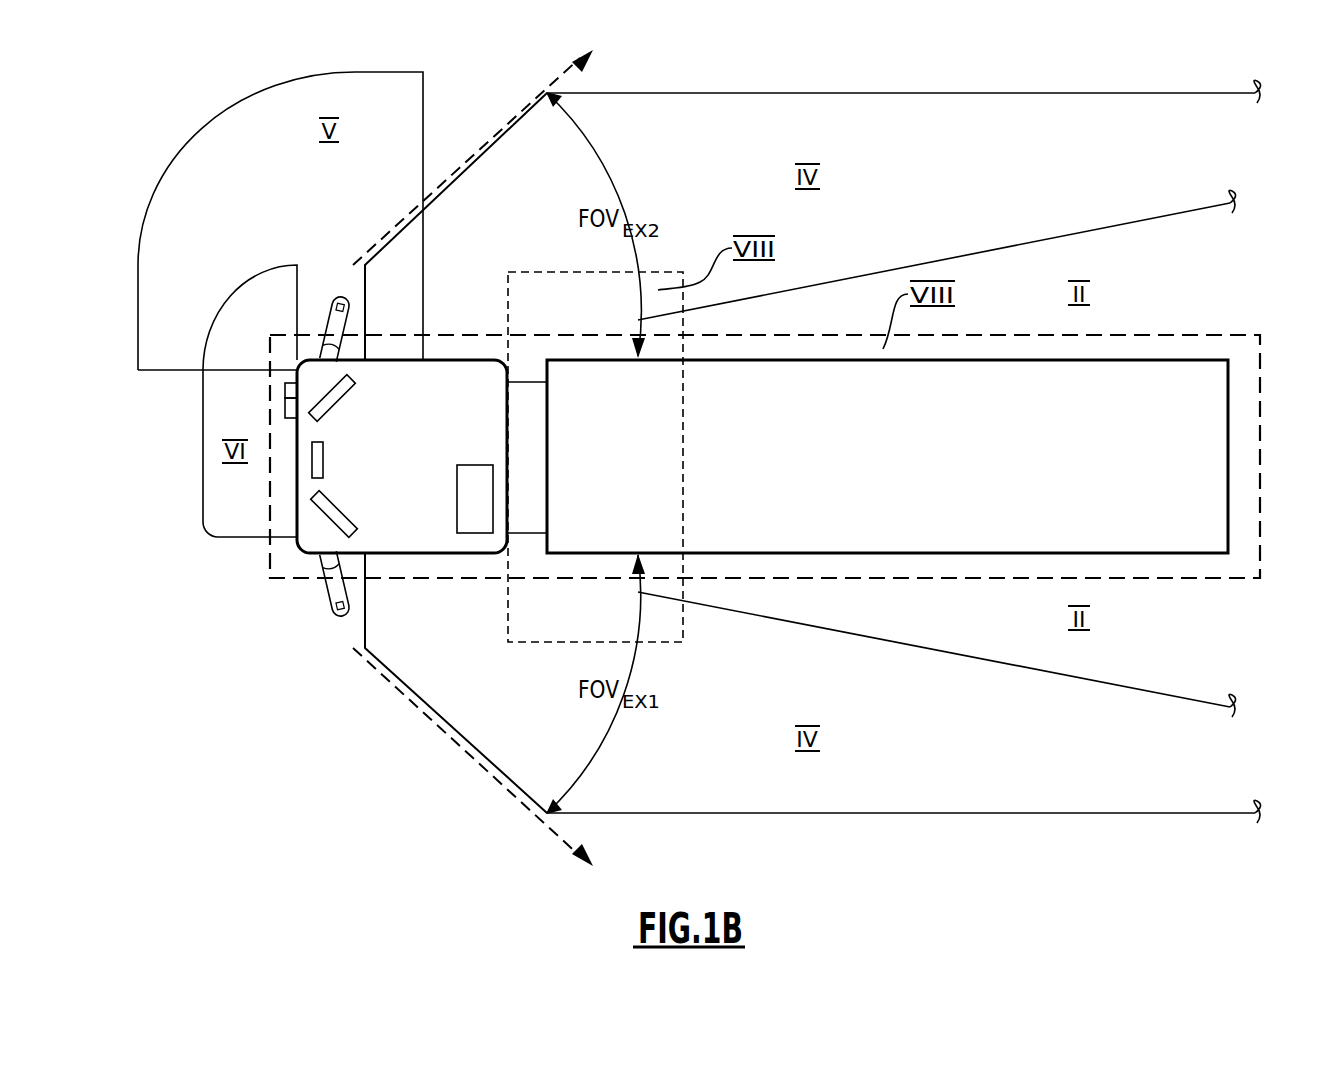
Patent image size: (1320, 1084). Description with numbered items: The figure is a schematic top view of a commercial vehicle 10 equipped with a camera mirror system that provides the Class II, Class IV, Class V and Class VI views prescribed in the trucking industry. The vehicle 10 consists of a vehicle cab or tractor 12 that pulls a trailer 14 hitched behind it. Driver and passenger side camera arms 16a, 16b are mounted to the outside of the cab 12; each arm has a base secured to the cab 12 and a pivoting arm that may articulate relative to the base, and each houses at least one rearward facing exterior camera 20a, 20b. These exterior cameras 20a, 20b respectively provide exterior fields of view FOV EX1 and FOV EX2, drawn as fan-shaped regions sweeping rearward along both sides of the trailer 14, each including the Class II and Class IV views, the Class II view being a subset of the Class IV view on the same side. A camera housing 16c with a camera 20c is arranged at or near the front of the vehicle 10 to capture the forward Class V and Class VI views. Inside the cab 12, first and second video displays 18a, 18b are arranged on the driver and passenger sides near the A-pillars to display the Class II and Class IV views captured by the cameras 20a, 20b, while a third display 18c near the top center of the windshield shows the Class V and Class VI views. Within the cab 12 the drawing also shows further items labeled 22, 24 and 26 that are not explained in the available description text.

The commercial vehicle 10 is at (264, 348).
The vehicle cab 12 is at (285, 553).
The trailer 14 is at (1140, 347).
The driver side camera arm 16a is at (333, 599).
The passenger side camera arm 16b is at (330, 317).
The camera housing 16c is at (285, 406).
The first video display 18a is at (340, 513).
The second video display 18b is at (340, 397).
The third display 18c is at (310, 463).
The exterior camera 20a is at (350, 608).
The exterior camera 20b is at (350, 307).
The camera 20c is at (285, 388).
The interior cavity 22 is at (447, 380).
The controller 24 is at (440, 489).
The processor 26 is at (477, 476).